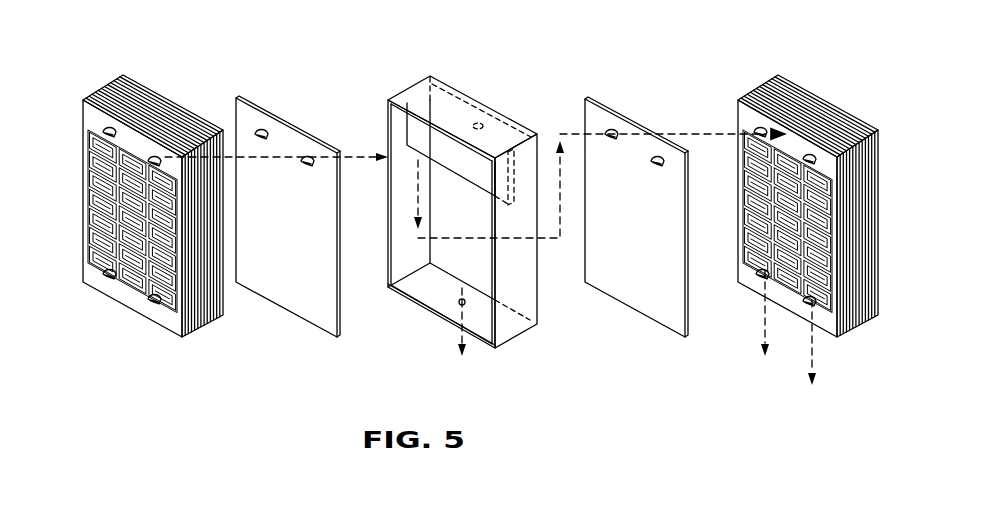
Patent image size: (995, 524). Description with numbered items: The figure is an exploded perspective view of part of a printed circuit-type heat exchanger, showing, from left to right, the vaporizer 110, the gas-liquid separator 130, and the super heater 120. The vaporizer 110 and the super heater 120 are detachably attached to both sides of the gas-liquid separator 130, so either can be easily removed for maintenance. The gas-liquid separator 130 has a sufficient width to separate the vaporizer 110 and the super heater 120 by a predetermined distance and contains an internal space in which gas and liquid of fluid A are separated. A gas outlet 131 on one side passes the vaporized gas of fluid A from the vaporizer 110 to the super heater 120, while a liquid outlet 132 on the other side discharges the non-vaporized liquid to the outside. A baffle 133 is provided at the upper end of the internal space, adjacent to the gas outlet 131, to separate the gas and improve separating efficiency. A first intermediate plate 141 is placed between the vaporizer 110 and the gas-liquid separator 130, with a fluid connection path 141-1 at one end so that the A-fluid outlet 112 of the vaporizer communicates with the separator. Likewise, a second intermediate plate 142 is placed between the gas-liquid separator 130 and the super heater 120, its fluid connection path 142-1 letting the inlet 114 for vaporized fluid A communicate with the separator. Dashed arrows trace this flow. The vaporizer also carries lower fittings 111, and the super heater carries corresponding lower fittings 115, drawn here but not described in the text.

The vaporizer 110 is at (120, 91).
The lower coupling protrusion 111 is at (108, 279).
The A-fluid outlet 112 is at (150, 158).
The inlet for vaporized fluid A 114 is at (808, 156).
The lower coupling protrusion 115 is at (762, 280).
The super heater 120 is at (762, 88).
The gas-liquid separator 130 is at (446, 91).
The gas outlet 131 is at (487, 118).
The liquid outlet 132 is at (458, 303).
The baffle 133 is at (463, 168).
The first intermediate plate 141 is at (236, 97).
The fluid connection path 141-1 is at (306, 157).
The second intermediate plate 142 is at (588, 97).
The fluid connection path 142-1 is at (656, 157).